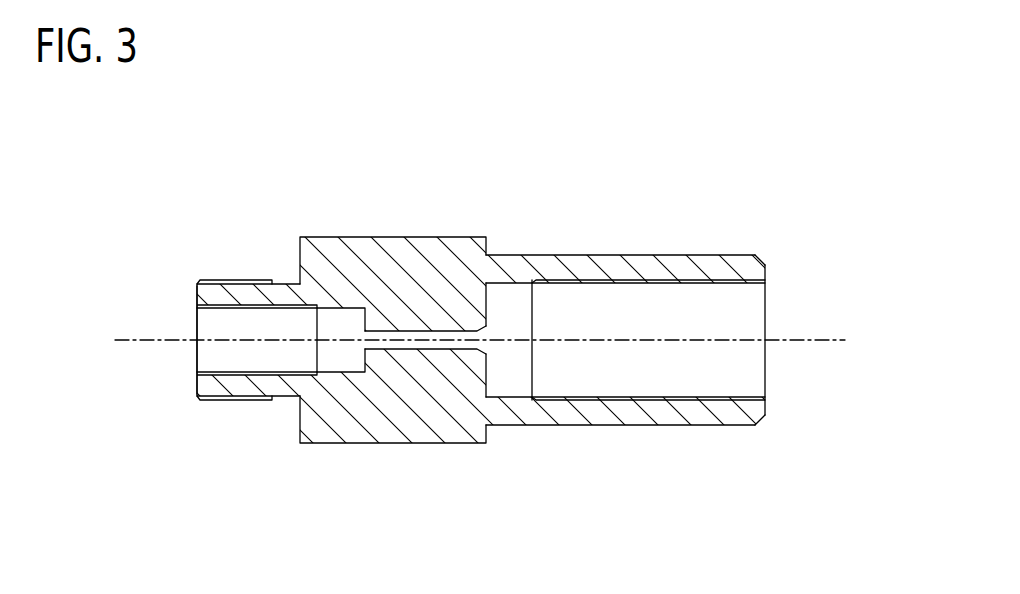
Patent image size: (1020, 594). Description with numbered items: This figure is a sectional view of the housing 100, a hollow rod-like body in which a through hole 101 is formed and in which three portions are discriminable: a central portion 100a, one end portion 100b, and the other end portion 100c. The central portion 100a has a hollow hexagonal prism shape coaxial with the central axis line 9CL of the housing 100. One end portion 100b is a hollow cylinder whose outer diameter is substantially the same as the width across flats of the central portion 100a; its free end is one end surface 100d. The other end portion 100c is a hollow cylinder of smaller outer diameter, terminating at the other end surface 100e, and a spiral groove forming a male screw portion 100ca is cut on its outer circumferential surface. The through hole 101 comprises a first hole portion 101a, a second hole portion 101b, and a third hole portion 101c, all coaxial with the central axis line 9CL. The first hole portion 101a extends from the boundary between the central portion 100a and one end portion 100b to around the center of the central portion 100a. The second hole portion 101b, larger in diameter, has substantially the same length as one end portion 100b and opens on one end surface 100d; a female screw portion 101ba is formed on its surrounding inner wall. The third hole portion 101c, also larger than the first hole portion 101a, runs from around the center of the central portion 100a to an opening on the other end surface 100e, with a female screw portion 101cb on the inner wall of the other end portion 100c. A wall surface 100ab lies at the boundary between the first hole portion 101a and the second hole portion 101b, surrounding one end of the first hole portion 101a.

The housing 100 is at (814, 154).
The central portion 100a is at (487, 188).
The one end portion 100b is at (767, 188).
The other end portion 100c is at (300, 188).
The wall surface 100ab is at (486, 308).
The male screw portion 100ca is at (232, 279).
The one end surface 100d is at (767, 270).
The other end surface 100e is at (197, 299).
The through hole 101 is at (531, 424).
The first hole portion 101a is at (424, 349).
The second hole portion 101b is at (513, 390).
The third hole portion 101c is at (338, 372).
The female screw portion 101ba is at (745, 283).
The female screw portion 101cb is at (208, 309).
The central axis line 9CL is at (501, 340).